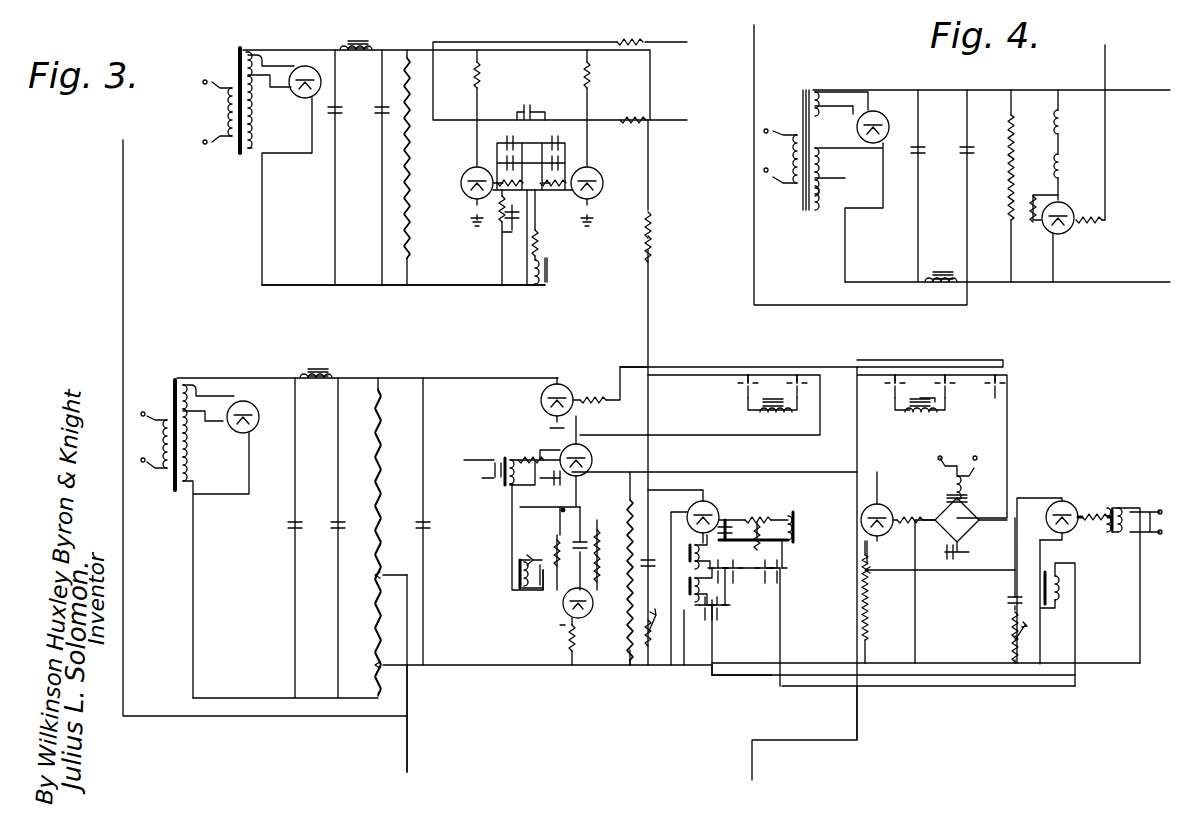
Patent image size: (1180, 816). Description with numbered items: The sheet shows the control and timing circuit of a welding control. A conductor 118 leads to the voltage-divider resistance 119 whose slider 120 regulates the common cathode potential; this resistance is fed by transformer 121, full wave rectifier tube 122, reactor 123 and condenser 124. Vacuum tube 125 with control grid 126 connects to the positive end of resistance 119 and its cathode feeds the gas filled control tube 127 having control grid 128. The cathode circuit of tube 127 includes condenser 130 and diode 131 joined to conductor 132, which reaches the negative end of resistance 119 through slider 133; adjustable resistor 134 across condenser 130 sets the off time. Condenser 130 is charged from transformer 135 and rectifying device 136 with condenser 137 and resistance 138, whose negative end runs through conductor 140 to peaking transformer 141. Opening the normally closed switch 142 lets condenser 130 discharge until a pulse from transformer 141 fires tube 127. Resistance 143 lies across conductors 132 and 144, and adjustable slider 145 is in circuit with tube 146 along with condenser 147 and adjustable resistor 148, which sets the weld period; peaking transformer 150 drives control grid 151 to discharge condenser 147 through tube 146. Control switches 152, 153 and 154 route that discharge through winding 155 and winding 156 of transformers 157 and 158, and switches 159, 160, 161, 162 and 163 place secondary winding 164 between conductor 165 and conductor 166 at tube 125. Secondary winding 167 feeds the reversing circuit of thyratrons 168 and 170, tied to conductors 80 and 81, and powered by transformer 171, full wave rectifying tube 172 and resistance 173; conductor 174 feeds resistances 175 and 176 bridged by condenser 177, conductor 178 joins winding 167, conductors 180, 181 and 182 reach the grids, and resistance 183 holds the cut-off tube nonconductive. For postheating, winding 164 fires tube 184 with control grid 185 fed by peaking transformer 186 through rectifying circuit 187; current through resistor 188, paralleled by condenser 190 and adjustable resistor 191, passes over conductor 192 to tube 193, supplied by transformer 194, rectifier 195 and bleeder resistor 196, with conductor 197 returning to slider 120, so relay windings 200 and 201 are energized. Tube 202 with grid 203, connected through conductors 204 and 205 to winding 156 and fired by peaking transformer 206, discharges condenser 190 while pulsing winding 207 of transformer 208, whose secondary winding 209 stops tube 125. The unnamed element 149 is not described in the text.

In FIG. 3, the conductor 80 is at (682, 116).
In FIG. 3, the conductor 81 is at (681, 36).
In FIG. 3, the conductor 118 is at (123, 290).
In FIG. 3, the resistance 119 is at (383, 449).
In FIG. 3, the slider 120 is at (395, 572).
In FIG. 3, the transformer 121 is at (172, 496).
In FIG. 3, the full wave rectifier tube 122 is at (268, 432).
In FIG. 3, the reactor 123 is at (315, 365).
In FIG. 3, the condenser 124 is at (330, 535).
In FIG. 3, the vacuum tube 125 is at (566, 386).
In FIG. 3, the control grid 126 is at (541, 401).
In FIG. 3, the control tube 127 is at (590, 449).
In FIG. 3, the control grid 128 is at (555, 450).
In FIG. 3, the condenser 130 is at (586, 540).
In FIG. 3, the diode 131 is at (560, 625).
In FIG. 3, the conductor 132 is at (528, 665).
In FIG. 3, the slider 133 is at (398, 662).
In FIG. 3, the adjustable resistor 134 is at (590, 618).
In FIG. 3, the transformer 135 is at (515, 565).
In FIG. 3, the rectifying device 136 is at (528, 559).
In FIG. 3, the condenser 137 is at (522, 594).
In FIG. 3, the resistance 138 is at (550, 594).
In FIG. 3, the conductor 140 is at (512, 508).
In FIG. 3, the peaking transformer 141 is at (492, 471).
In FIG. 3, the switch 142 is at (563, 510).
In FIG. 3, the resistance 143 is at (627, 655).
In FIG. 3, the conductor 144 is at (750, 472).
In FIG. 3, the adjustable slider 145 is at (630, 500).
In FIG. 3, the tube 146 is at (712, 502).
In FIG. 3, the condenser 147 is at (690, 613).
In FIG. 3, the adjustable resistor 148 is at (655, 653).
In FIG. 3, the resistor 149 is at (648, 268).
In FIG. 3, the peaking transformer 150 is at (793, 540).
In FIG. 3, the control grid 151 is at (720, 520).
In FIG. 3, the control switch 152 is at (736, 578).
In FIG. 3, the control switch 153 is at (716, 613).
In FIG. 3, the control switch 154 is at (780, 575).
In FIG. 3, the winding 155 is at (725, 540).
In FIG. 3, the winding 156 is at (732, 603).
In FIG. 3, the transformer 157 is at (910, 417).
In FIG. 3, the transformer 158 is at (553, 273).
In FIG. 3, the switch 159 is at (748, 375).
In FIG. 3, the switch 160 is at (797, 375).
In FIG. 3, the switch 161 is at (905, 373).
In FIG. 3, the switch 162 is at (955, 373).
In FIG. 3, the switch 163 is at (1010, 370).
In FIG. 3, the secondary winding 164 is at (925, 408).
In FIG. 3, the conductor 165 is at (677, 367).
In FIG. 3, the conductor 166 is at (677, 435).
In FIG. 3, the secondary winding 167 is at (536, 288).
In FIG. 3, the thyratron 168 is at (458, 176).
In FIG. 3, the thyratron 170 is at (620, 166).
In FIG. 3, the transformer 171 is at (230, 143).
In FIG. 3, the full wave rectifying tube 172 is at (314, 65).
In FIG. 3, the resistance 173 is at (407, 196).
In FIG. 3, the conductor 174 is at (507, 42).
In FIG. 3, the resistance 175 is at (480, 76).
In FIG. 3, the resistance 176 is at (589, 77).
In FIG. 3, the condenser 177 is at (536, 102).
In FIG. 3, the conductor 178 is at (445, 290).
In FIG. 3, the conductor 180 is at (537, 229).
In FIG. 3, the conductor 181 is at (520, 285).
In FIG. 3, the conductor 182 is at (495, 260).
In FIG. 3, the resistance 183 is at (495, 230).
In FIG. 3, the tube 184 is at (885, 508).
In FIG. 3, the control grid 185 is at (862, 518).
In FIG. 3, the peaking transformer 186 is at (975, 475).
In FIG. 3, the rectifying circuit 187 is at (960, 542).
In FIG. 3, the resistor 188 is at (878, 575).
In FIG. 3, the condenser 190 is at (1008, 600).
In FIG. 3, the adjustable resistor 191 is at (1010, 632).
In FIG. 3, the conductor 192 is at (857, 717).
In FIG. 4, the conductor 192 is at (1105, 50).
In FIG. 4, the grid controlled vacuum tube 193 is at (1075, 233).
In FIG. 4, the transformer 194 is at (795, 206).
In FIG. 4, the full wave rectifier 195 is at (881, 110).
In FIG. 4, the bleeder resistor 196 is at (1012, 117).
In FIG. 3, the conductor 197 is at (407, 748).
In FIG. 4, the conductor 197 is at (754, 50).
In FIG. 4, the relay winding 200 is at (1065, 124).
In FIG. 4, the relay winding 201 is at (1065, 162).
In FIG. 3, the tube 202 is at (1070, 501).
In FIG. 3, the grid 203 is at (1112, 510).
In FIG. 3, the conductor 204 is at (1035, 687).
In FIG. 3, the conductor 205 is at (975, 685).
In FIG. 3, the peaking transformer 206 is at (1157, 534).
In FIG. 3, the winding 207 is at (1063, 597).
In FIG. 3, the transformer 208 is at (770, 412).
In FIG. 3, the secondary winding 209 is at (742, 410).